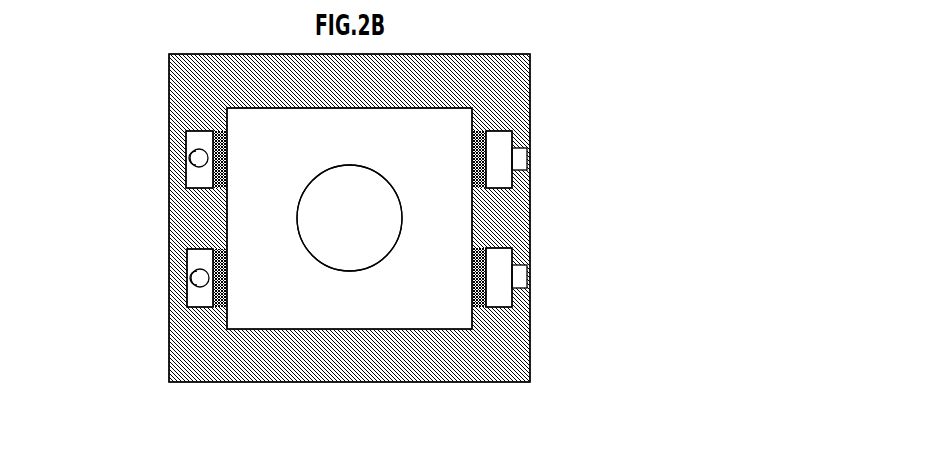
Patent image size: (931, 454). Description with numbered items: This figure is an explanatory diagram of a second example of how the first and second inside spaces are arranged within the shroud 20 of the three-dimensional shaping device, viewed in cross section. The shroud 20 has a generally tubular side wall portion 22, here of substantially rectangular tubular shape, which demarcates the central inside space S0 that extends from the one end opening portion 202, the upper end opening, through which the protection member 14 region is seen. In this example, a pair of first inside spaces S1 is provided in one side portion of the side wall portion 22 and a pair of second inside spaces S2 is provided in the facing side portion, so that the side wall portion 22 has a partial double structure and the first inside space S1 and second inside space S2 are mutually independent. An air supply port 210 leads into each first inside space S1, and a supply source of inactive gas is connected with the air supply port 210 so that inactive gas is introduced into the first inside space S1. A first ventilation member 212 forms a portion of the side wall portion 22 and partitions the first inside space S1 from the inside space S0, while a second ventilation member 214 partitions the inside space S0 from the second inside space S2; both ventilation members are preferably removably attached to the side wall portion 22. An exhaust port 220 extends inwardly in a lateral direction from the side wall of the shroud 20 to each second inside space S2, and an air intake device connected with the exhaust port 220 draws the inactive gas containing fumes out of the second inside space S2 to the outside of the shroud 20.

The shroud 20 is at (548, 80).
The side wall portion 22 is at (532, 344).
The protection member 14 is at (378, 213).
The one end opening portion 202 is at (376, 254).
The air supply port 210 is at (200, 158).
The first ventilation member 212 is at (212, 182).
The second ventilation member 214 is at (488, 176).
The exhaust port 220 is at (519, 150).
The inside space S0 is at (288, 318).
The first inside space S1 is at (192, 134).
The second inside space S2 is at (505, 137).